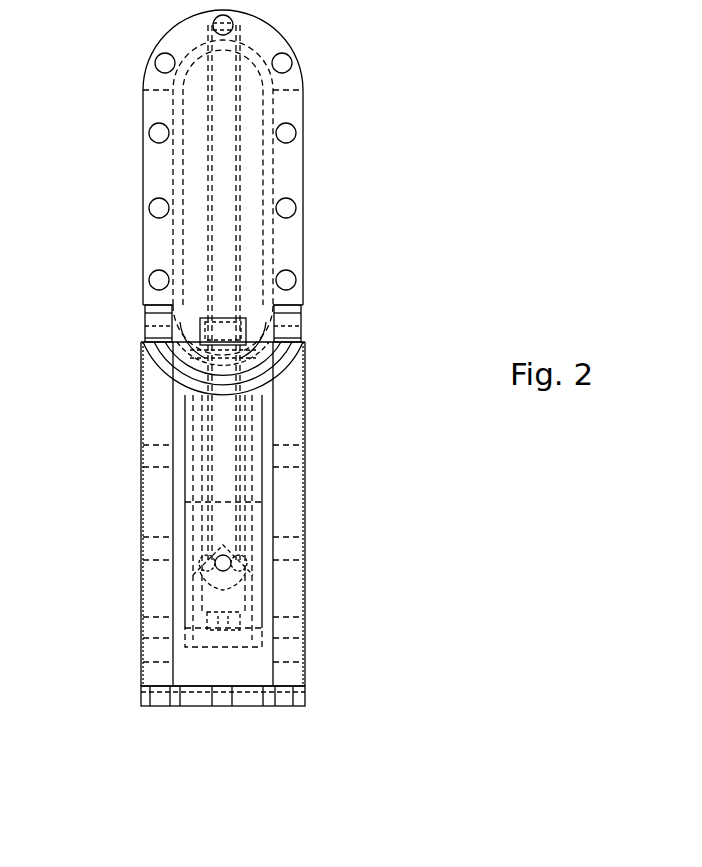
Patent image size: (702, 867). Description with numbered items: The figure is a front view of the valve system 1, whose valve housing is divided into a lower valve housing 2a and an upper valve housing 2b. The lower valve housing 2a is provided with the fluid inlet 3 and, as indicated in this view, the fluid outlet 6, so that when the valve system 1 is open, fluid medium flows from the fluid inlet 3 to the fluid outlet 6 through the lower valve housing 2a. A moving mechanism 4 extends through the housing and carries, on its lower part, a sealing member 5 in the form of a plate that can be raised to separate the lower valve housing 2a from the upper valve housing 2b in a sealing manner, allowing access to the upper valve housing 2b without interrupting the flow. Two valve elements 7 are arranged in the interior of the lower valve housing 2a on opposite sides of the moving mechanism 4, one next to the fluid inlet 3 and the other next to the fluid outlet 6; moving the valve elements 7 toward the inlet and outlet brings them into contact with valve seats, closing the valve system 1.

The valve system 1 is at (450, 86).
The lower valve housing 2a is at (157, 567).
The upper valve housing 2b is at (167, 181).
The fluid inlet 3 is at (142, 478).
The moving mechanism 4 is at (225, 200).
The sealing member 5 is at (237, 648).
The fluid outlet 6 is at (305, 510).
The valve elements 7 is at (255, 590).